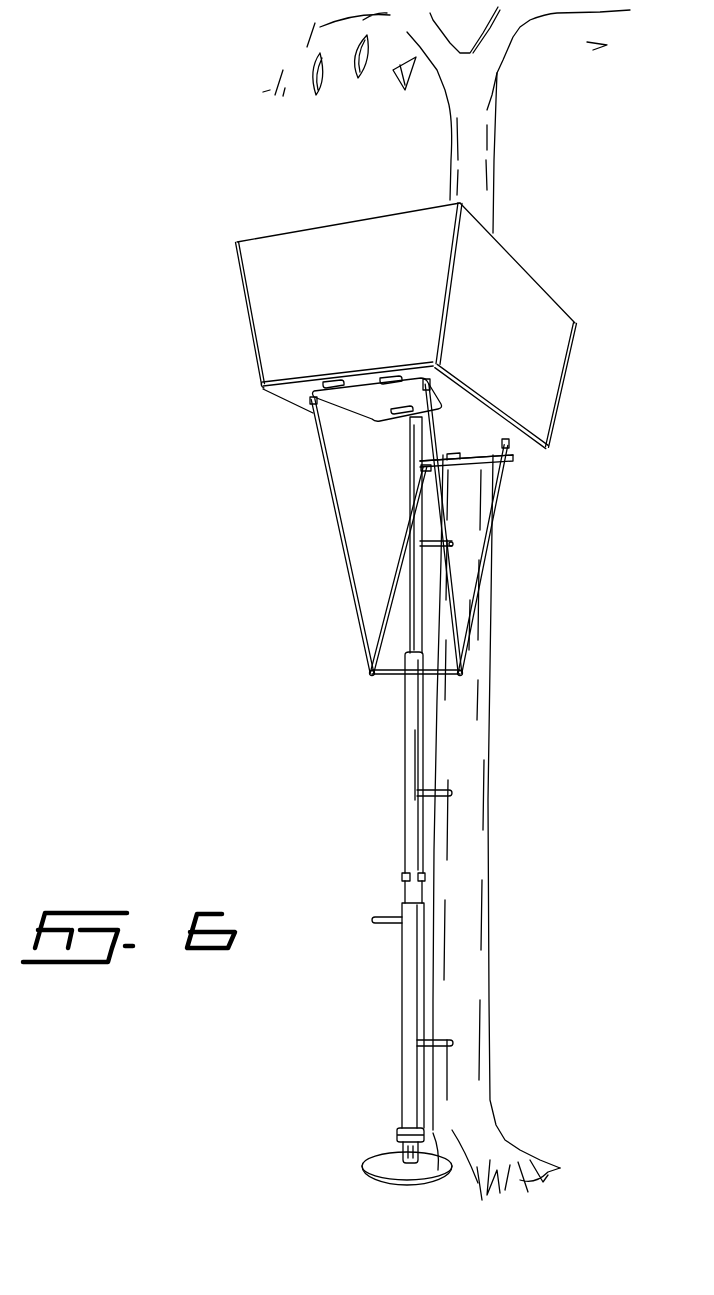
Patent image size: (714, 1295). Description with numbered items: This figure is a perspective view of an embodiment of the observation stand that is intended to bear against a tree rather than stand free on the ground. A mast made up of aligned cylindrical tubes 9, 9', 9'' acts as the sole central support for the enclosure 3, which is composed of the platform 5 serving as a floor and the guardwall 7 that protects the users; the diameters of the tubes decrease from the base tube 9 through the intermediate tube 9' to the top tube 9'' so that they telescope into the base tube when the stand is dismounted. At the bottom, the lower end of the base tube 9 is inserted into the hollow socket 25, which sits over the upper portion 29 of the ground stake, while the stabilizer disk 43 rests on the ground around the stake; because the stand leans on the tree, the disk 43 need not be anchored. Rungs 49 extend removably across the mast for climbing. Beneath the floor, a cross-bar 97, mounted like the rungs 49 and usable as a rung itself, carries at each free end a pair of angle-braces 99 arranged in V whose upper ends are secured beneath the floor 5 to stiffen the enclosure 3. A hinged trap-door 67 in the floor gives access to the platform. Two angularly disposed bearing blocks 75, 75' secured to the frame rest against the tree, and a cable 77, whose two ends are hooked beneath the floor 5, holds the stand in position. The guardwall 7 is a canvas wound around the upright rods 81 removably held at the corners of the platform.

The enclosure 3 is at (585, 305).
The platform 5 is at (556, 455).
The guardwall 7 is at (555, 335).
The base tube 9 is at (380, 1015).
The intermediate tube 9' is at (384, 777).
The top tube 9'' is at (372, 535).
The hollow socket 25 is at (400, 1142).
The upper portion of stake 29 is at (413, 1160).
The stabilizer disk 43 is at (387, 1165).
The rungs 49 is at (442, 787).
The trap-door 67 is at (405, 397).
The bearing block 75 is at (505, 488).
The bearing block 75' is at (466, 437).
The cable 77 is at (427, 467).
The upper rods 81 is at (255, 313).
The cross-bar 97 is at (390, 677).
The angle-braces 99 is at (397, 530).